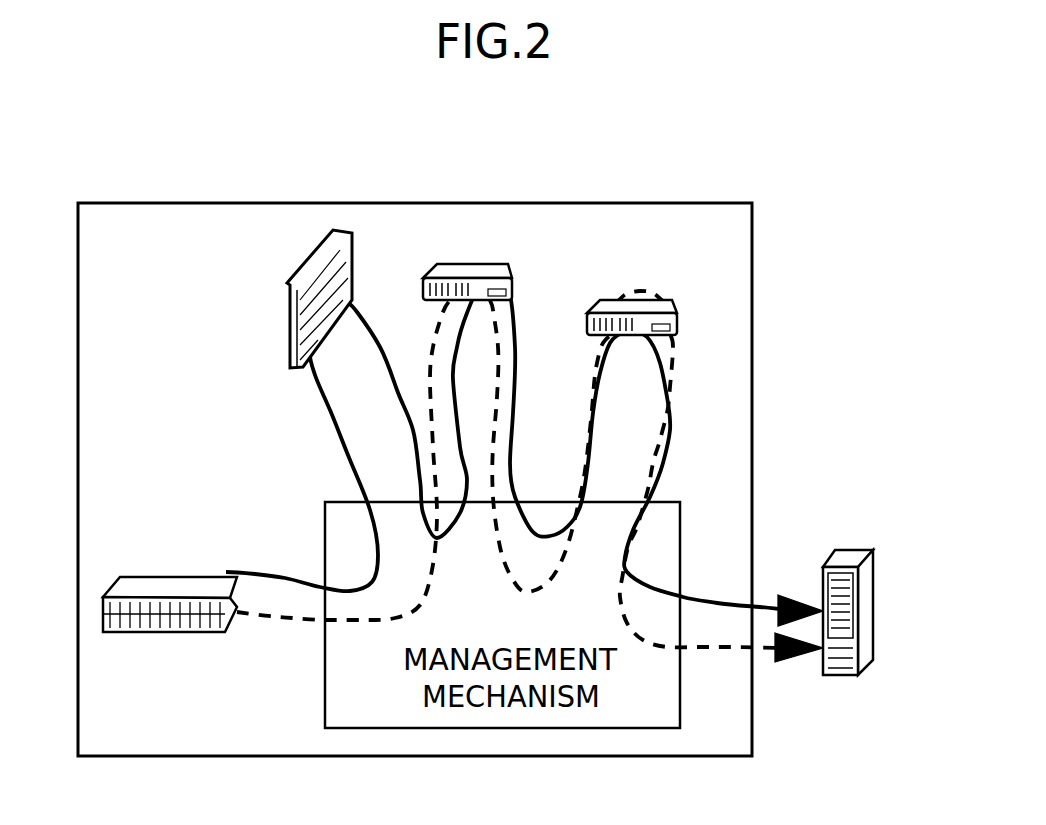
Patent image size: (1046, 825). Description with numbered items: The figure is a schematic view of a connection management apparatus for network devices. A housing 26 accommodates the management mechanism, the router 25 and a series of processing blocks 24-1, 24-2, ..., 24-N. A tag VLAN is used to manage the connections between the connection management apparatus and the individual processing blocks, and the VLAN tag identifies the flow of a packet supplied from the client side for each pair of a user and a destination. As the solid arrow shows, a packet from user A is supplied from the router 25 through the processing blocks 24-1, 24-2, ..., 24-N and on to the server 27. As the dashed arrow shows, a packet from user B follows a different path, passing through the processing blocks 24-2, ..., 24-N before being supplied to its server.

The processing block 24-1 is at (292, 294).
The processing block 24-2 is at (476, 268).
The processing block 24-N is at (617, 292).
The router 25 is at (167, 575).
The housing 26 is at (753, 268).
The server 27 is at (875, 595).